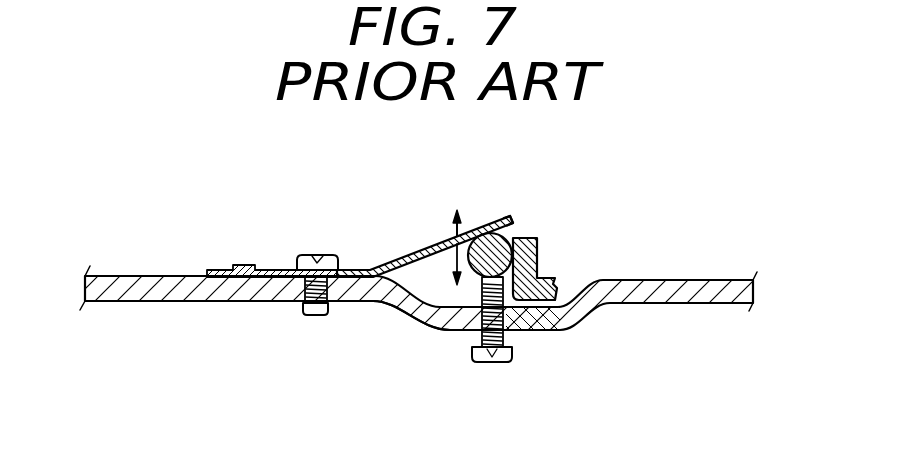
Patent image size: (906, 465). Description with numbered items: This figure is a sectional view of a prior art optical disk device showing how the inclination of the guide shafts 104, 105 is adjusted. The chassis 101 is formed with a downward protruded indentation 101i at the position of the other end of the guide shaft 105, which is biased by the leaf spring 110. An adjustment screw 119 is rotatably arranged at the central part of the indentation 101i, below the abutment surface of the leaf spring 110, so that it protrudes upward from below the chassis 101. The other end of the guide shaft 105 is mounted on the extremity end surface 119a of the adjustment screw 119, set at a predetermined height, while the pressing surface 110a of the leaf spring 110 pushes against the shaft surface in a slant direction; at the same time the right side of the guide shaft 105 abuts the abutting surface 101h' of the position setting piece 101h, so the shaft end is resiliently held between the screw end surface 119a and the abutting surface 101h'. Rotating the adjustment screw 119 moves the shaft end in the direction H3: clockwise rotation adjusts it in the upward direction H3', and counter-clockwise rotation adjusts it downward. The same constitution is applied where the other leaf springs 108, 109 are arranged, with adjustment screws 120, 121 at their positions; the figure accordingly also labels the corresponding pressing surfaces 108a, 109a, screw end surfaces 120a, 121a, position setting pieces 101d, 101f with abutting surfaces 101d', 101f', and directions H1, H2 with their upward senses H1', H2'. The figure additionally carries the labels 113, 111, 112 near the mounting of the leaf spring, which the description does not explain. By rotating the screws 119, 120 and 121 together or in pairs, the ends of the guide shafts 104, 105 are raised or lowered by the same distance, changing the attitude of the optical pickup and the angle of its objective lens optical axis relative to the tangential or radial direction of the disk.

The chassis 101 is at (432, 327).
The indentation 101i is at (372, 314).
The position setting piece 101h is at (645, 265).
The stopper projection 101d is at (645, 265).
The stopper projection 101f is at (645, 265).
The abutting surface 101h' is at (607, 339).
The bracket portion under stopper 101d' is at (607, 339).
The bracket portion under stopper 101f' is at (607, 339).
The fixed plate 113 is at (265, 246).
The fixed plate 111 is at (265, 246).
The fixed plate 112 is at (301, 257).
The leaf spring 109 is at (477, 207).
The leaf spring 108 is at (477, 207).
The leaf spring 110 is at (477, 207).
The pressing surface 110a is at (615, 198).
The lever plate end 108a is at (615, 198).
The lever plate end 109a is at (512, 221).
The guide shaft 105 is at (595, 238).
The guide shaft 104 is at (508, 237).
The adjustment screw 119 is at (591, 345).
The adjustment screw 120 is at (591, 345).
The adjustment screw 121 is at (591, 345).
The extremity end surface 119a is at (504, 341).
The screw shaft 120a is at (504, 341).
The screw shaft 121a is at (462, 282).
The direction H3 is at (449, 173).
The height H1 is at (449, 173).
The height H2 is at (449, 173).
The upward direction H3' is at (510, 191).
The upward direction H1' is at (510, 191).
The upward direction H2' is at (510, 191).